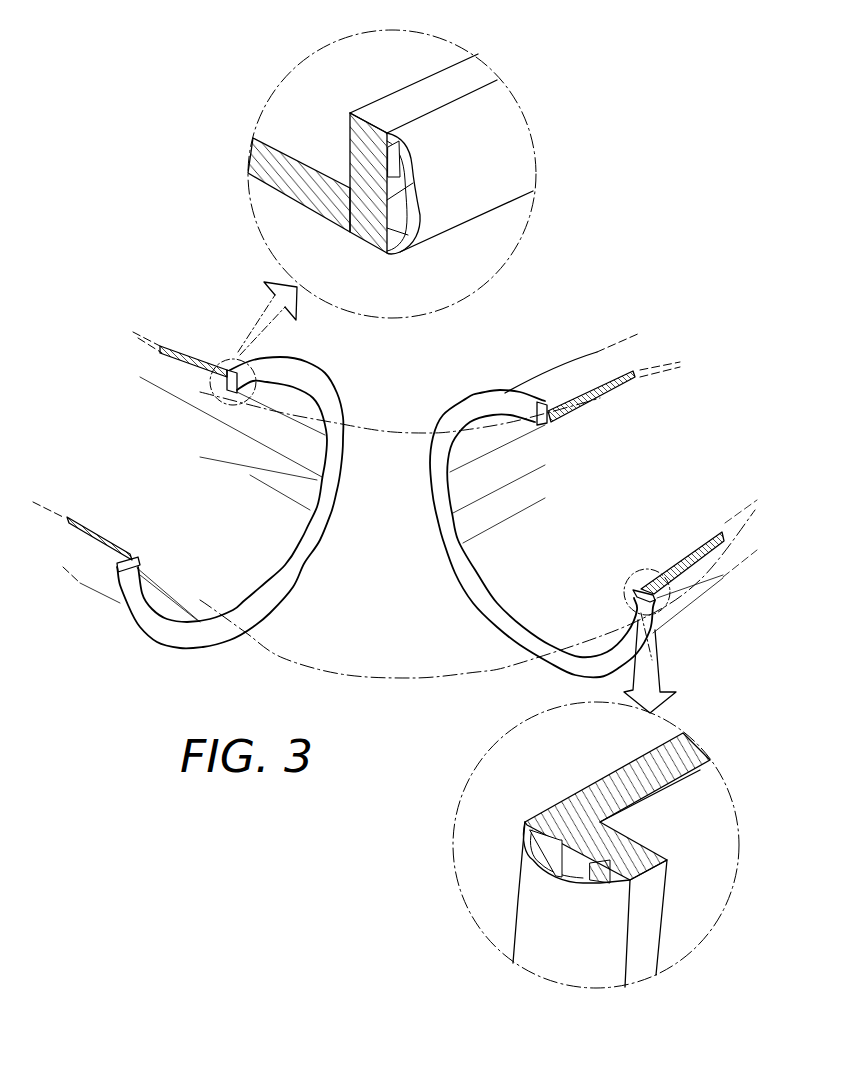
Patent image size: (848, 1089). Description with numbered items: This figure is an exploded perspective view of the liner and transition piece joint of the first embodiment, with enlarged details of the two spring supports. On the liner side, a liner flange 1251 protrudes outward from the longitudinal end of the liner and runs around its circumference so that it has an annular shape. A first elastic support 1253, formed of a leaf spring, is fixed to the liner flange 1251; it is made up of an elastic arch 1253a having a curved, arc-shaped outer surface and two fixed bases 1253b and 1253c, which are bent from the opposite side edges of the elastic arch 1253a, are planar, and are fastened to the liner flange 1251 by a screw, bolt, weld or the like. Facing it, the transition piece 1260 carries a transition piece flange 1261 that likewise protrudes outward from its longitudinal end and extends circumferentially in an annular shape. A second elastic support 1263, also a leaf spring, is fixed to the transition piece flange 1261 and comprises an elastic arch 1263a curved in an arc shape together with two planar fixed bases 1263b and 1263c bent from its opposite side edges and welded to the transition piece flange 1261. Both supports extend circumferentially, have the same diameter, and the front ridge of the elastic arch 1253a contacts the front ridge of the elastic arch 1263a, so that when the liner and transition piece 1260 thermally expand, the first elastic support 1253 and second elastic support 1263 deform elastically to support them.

The liner flange 1251 is at (260, 160).
The first elastic support 1253 is at (474, 138).
The elastic arch 1253a is at (498, 160).
The fixed base 1253b is at (397, 228).
The fixed base 1253c is at (394, 157).
The transition piece 1260 is at (181, 335).
The transition piece flange 1261 is at (620, 847).
The second elastic support 1263 is at (589, 905).
The elastic arch 1263a is at (527, 897).
The fixed base 1263b is at (545, 846).
The fixed base 1263c is at (598, 862).